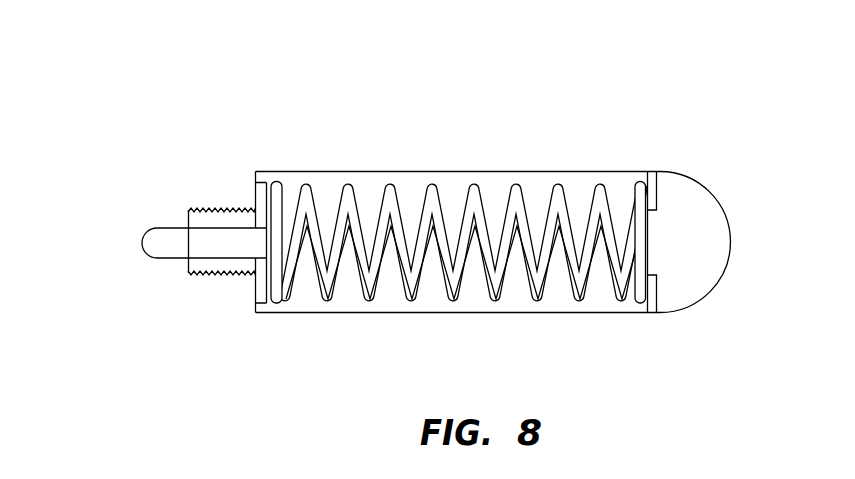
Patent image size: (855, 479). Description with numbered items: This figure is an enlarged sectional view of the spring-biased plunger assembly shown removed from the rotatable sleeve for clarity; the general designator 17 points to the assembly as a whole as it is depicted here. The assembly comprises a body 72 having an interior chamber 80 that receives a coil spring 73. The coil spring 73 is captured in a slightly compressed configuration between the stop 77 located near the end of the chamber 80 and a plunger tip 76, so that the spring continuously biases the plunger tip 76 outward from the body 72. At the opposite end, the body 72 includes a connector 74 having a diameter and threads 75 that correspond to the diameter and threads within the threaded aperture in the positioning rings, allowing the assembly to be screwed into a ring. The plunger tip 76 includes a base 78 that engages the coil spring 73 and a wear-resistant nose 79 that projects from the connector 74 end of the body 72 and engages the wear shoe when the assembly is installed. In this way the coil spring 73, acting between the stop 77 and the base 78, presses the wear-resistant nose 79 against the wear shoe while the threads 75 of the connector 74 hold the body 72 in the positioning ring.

The plunger assembly 17 is at (437, 116).
The body 72 is at (532, 171).
The coil spring 73 is at (373, 306).
The connector 74 is at (210, 276).
The threads 75 is at (212, 209).
The plunger tip 76 is at (167, 226).
The stop 77 is at (660, 288).
The base 78 is at (270, 178).
The wear-resistant nose 79 is at (140, 250).
The interior chamber 80 is at (517, 300).